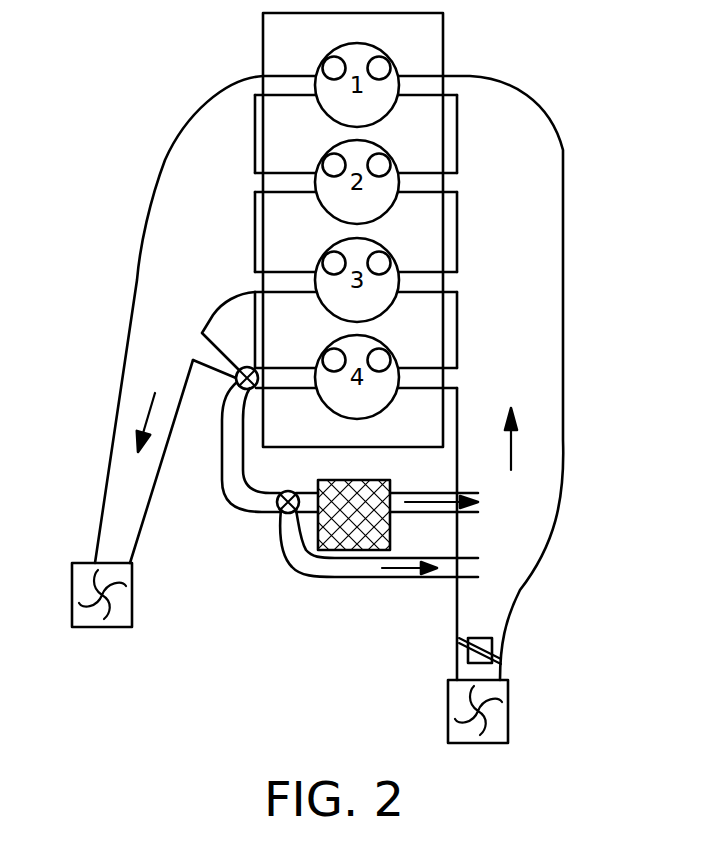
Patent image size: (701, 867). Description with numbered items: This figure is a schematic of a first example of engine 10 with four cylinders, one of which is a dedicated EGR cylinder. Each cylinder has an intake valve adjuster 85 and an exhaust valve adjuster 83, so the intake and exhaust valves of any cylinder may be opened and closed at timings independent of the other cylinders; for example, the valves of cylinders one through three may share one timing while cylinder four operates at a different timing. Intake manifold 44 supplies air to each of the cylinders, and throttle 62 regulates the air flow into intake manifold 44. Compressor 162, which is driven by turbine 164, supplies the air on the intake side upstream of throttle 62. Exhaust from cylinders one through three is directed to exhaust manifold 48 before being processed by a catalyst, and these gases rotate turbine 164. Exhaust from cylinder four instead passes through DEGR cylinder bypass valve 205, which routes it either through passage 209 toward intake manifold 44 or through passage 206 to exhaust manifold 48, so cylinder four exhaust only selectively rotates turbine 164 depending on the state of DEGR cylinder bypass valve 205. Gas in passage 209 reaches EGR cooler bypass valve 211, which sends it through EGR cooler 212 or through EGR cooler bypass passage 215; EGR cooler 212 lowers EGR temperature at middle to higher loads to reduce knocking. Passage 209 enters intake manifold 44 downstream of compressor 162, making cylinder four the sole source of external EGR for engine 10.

The engine 10 is at (262, 32).
The exhaust valve adjuster 83 is at (322, 201).
The intake valve adjuster 85 is at (395, 201).
The exhaust manifold 48 is at (201, 273).
The intake manifold 44 is at (517, 333).
The passage 206 is at (218, 360).
The DEGR cylinder bypass valve 205 is at (248, 367).
The passage 209 is at (233, 498).
The EGR cooler bypass valve 211 is at (281, 513).
The EGR cooler 212 is at (365, 480).
The EGR cooler bypass passage 215 is at (357, 580).
The turbine 164 is at (80, 563).
The compressor 162 is at (453, 679).
The throttle 62 is at (493, 647).